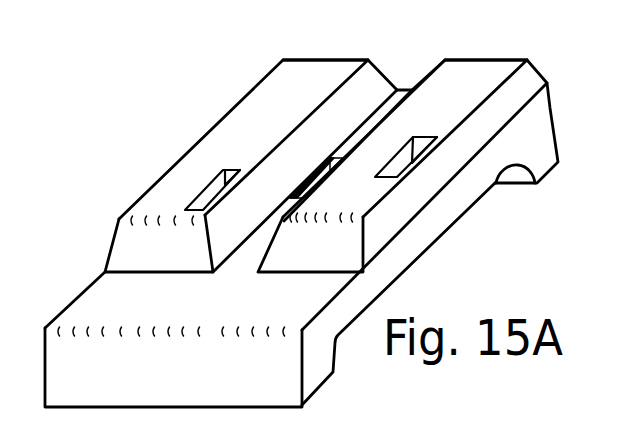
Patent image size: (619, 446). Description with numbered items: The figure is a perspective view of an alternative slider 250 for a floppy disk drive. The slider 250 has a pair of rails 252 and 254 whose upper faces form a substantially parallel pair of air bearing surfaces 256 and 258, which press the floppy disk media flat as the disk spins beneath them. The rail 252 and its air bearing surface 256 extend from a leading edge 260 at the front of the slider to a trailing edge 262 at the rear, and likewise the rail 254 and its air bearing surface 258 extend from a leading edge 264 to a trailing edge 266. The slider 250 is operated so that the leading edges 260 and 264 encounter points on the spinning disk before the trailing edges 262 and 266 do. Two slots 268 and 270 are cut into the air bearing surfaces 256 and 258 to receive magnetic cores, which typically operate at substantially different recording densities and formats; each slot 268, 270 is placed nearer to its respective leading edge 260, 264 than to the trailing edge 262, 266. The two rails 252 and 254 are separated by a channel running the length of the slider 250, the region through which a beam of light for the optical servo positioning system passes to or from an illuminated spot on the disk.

The slider 250 is at (203, 99).
The rail 252 is at (382, 78).
The rail 254 is at (530, 83).
The air bearing surface 256 is at (306, 111).
The air bearing surface 258 is at (468, 113).
The leading edge 260 is at (138, 218).
The trailing edge 262 is at (315, 60).
The leading edge 264 is at (314, 228).
The trailing edge 266 is at (497, 60).
The slot 268 is at (205, 185).
The slot 270 is at (410, 163).